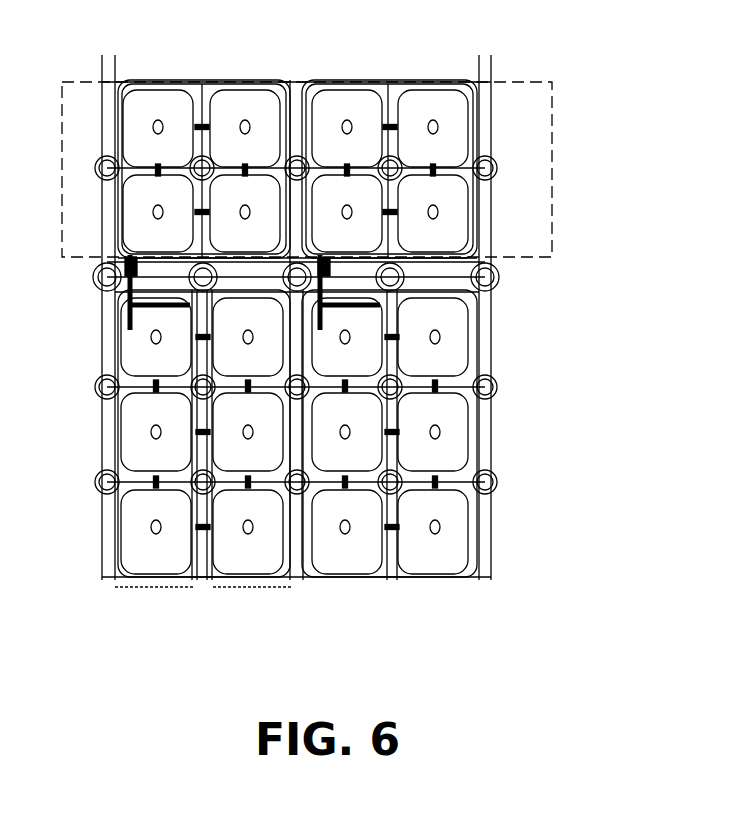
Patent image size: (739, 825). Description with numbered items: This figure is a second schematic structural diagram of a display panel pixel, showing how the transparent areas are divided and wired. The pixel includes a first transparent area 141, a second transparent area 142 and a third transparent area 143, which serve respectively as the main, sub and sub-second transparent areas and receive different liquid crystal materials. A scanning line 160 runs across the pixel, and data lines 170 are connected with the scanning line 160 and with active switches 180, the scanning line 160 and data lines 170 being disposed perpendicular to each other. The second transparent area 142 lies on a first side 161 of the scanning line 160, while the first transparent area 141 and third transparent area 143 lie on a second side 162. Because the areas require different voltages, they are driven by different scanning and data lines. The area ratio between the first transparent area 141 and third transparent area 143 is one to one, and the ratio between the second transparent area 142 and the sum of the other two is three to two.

The first transparent area 141 is at (552, 132).
The second transparent area 142 is at (143, 590).
The third transparent area 143 is at (235, 590).
The scanning line 160 is at (500, 290).
The first side 161 is at (478, 244).
The second side 162 is at (114, 290).
The data line 170 is at (494, 342).
The active switch 180 is at (97, 274).